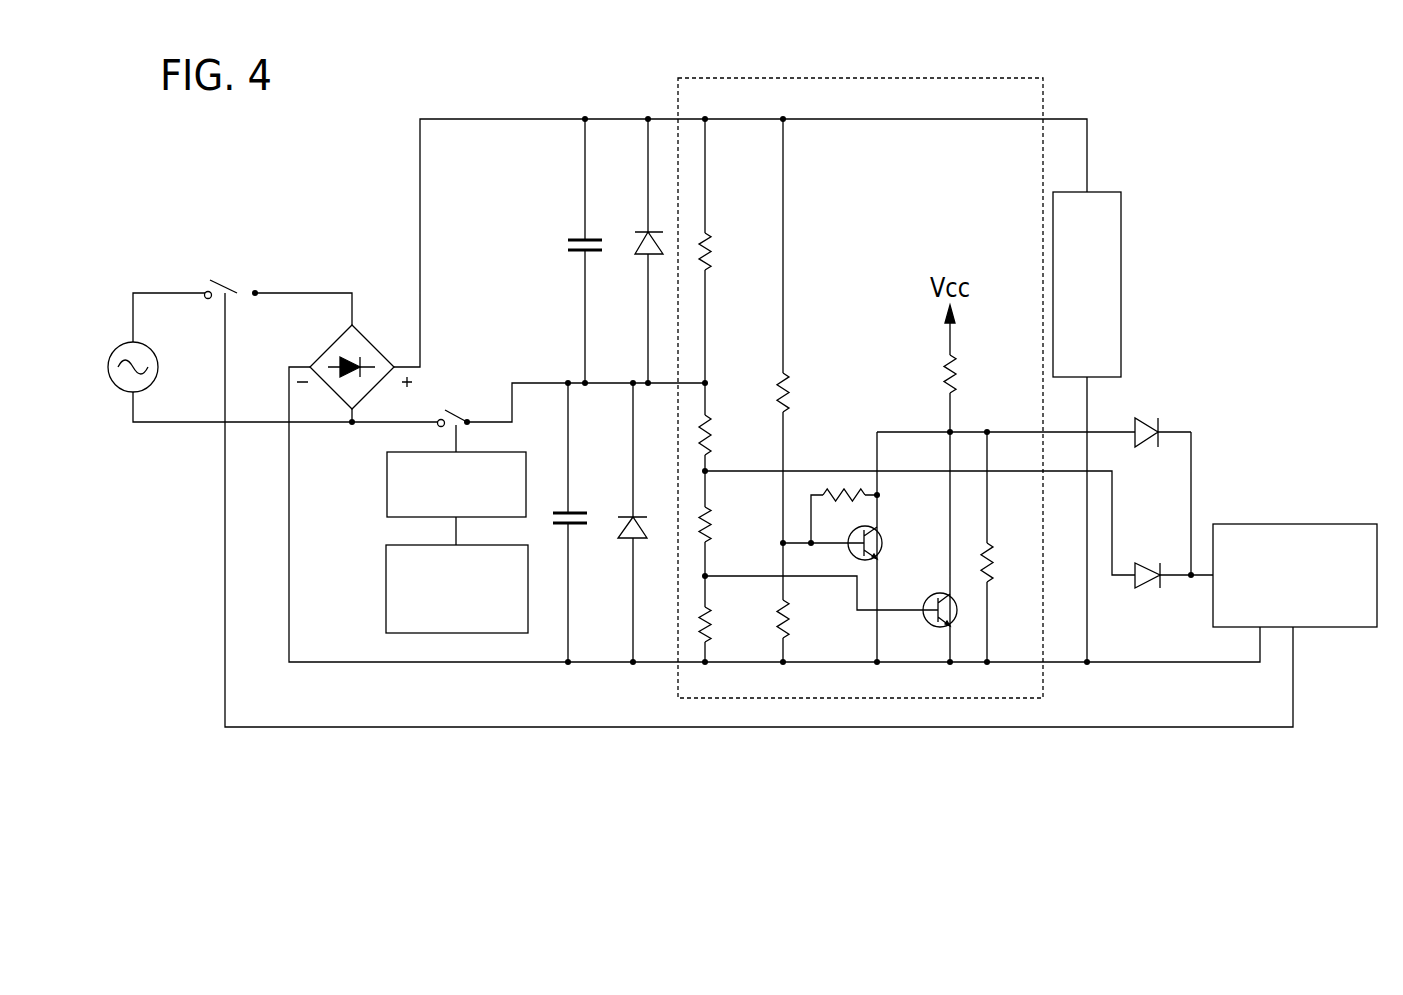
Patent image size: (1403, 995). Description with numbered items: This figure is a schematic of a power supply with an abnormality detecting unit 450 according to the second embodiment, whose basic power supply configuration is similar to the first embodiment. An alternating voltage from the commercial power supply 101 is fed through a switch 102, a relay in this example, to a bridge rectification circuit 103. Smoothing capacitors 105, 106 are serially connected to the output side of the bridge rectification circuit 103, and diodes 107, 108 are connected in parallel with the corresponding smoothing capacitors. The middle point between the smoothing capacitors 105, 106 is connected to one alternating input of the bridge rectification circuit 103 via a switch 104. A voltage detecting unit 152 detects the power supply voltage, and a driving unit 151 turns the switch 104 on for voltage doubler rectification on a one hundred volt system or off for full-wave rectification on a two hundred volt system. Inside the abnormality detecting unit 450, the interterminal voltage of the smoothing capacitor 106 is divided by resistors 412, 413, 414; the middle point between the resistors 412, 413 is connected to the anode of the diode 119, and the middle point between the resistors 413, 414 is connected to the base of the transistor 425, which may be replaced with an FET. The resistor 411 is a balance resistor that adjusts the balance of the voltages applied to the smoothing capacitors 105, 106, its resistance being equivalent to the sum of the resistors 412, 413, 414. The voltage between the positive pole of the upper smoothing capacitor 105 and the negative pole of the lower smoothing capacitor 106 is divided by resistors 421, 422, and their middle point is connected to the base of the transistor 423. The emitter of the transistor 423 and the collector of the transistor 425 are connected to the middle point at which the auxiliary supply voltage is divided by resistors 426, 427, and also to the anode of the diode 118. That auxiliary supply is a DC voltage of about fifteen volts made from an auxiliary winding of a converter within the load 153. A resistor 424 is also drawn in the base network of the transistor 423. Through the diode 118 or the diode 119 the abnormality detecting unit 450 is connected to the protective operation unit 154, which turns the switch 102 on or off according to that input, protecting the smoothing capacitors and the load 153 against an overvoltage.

The commercial power supply 101 is at (155, 348).
The switch 102 is at (234, 272).
The bridge rectification circuit 103 is at (390, 332).
The switch 104 is at (457, 410).
The smoothing capacitor 105 is at (572, 238).
The smoothing capacitor 106 is at (592, 498).
The diode 107 is at (640, 257).
The diode 108 is at (628, 540).
The diode 118 is at (1142, 422).
The diode 119 is at (1153, 553).
The driving unit 151 is at (387, 487).
The voltage detecting unit 152 is at (386, 590).
The load 153 is at (1124, 283).
The protective operation unit 154 is at (1293, 523).
The resistor 411 is at (712, 243).
The resistor 412 is at (712, 425).
The resistor 413 is at (712, 515).
The resistor 414 is at (712, 632).
The resistor 421 is at (790, 390).
The resistor 422 is at (790, 627).
The transistor 423 is at (883, 533).
The resistor 424 is at (845, 487).
The transistor 425 is at (937, 592).
The resistor 426 is at (945, 360).
The resistor 427 is at (990, 557).
The abnormality detecting unit 450 is at (678, 685).